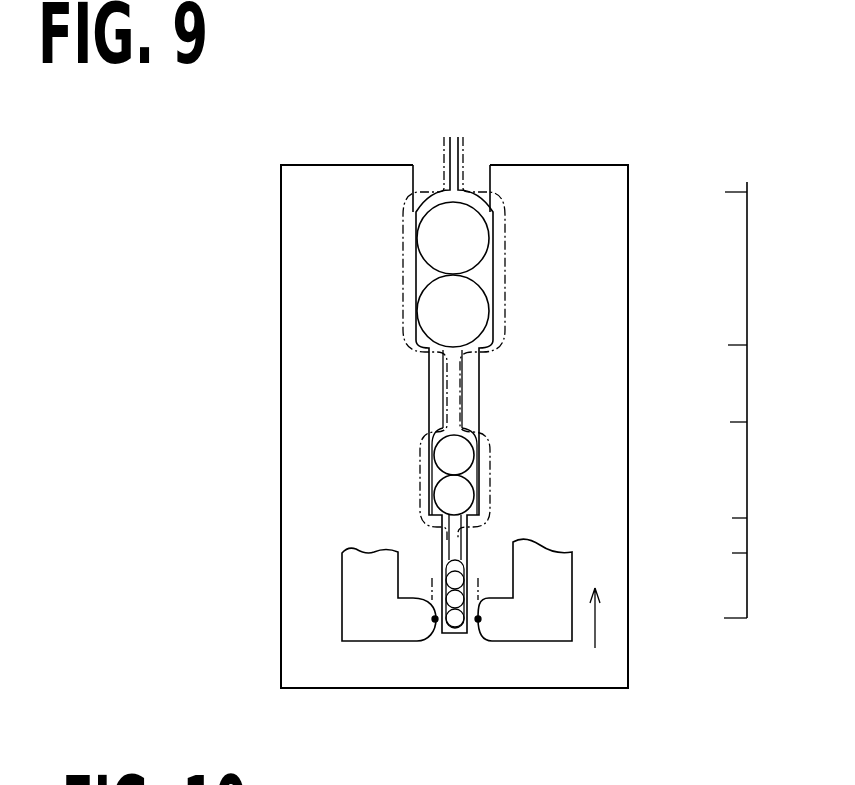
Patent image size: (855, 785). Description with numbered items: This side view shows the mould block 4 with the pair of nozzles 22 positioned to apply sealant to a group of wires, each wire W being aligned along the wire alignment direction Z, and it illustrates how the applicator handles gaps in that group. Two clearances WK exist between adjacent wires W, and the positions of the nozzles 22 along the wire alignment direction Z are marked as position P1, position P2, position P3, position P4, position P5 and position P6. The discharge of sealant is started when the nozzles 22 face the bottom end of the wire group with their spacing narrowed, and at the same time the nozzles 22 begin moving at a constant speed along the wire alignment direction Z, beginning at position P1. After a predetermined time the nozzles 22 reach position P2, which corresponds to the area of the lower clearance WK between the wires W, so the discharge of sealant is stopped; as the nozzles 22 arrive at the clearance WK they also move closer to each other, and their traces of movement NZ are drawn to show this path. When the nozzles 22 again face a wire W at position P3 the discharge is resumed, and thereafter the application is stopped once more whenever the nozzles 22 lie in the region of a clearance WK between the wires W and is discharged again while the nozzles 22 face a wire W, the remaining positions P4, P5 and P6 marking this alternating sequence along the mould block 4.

The mould block 4 is at (607, 462).
The nozzles 22 is at (368, 641).
The wire W is at (443, 252).
The clearance WK is at (437, 390).
The traces of movement NZ is at (482, 368).
The wire alignment direction Z is at (596, 599).
The position P1 is at (755, 617).
The position P2 is at (759, 553).
The position P3 is at (759, 517).
The position P4 is at (758, 422).
The position P5 is at (757, 345).
The position P6 is at (755, 192).